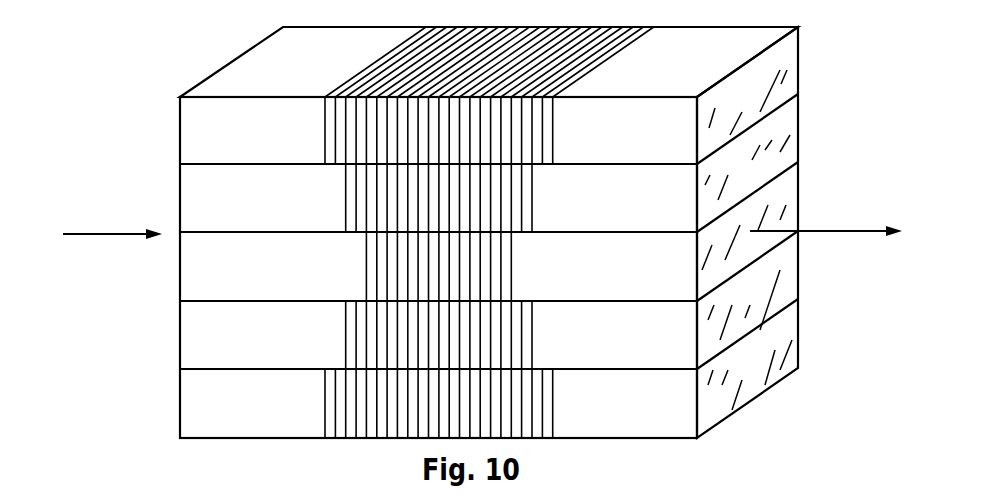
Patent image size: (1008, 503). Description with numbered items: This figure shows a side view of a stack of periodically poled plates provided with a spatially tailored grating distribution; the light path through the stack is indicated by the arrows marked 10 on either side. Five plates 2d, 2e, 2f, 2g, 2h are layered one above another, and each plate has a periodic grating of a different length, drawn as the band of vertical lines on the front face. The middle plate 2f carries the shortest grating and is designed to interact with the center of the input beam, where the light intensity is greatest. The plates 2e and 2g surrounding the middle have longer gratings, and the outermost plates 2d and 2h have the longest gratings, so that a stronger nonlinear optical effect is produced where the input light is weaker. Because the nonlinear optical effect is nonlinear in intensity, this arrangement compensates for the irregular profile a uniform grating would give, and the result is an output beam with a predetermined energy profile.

The optical device / multilayer stack 10 is at (470, 232).
The plate 2d is at (489, 129).
The plate 2e is at (489, 197).
The plate 2f is at (489, 266).
The plate 2g is at (489, 334).
The plate 2h is at (498, 403).